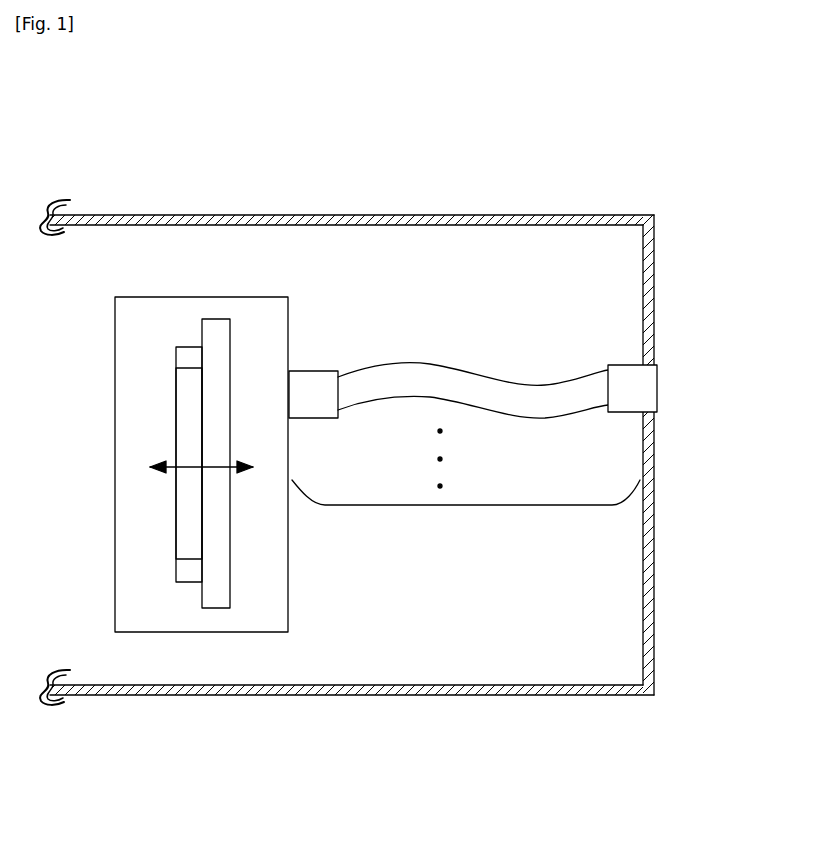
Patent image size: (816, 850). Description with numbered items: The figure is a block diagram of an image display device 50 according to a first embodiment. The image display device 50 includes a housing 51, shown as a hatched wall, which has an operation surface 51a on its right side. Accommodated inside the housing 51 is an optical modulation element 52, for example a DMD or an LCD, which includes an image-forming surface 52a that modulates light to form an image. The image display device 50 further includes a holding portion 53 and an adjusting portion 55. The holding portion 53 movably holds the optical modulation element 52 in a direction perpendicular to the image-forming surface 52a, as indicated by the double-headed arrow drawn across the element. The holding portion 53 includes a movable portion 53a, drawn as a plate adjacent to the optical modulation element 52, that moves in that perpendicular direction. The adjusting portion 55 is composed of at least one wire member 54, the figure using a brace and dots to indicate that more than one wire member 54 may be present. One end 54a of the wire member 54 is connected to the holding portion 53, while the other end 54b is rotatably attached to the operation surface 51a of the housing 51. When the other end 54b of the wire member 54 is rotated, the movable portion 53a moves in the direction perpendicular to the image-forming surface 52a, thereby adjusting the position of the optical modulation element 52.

The image display device 50 is at (386, 197).
The housing 51 is at (465, 214).
The operation surface 51a is at (656, 362).
The optical modulation element 52 is at (192, 345).
The image-forming surface 52a is at (176, 505).
The holding portion 53 is at (288, 298).
The movable portion 53a is at (222, 318).
The wire member 54 is at (436, 367).
The one end 54a is at (309, 371).
The other end 54b is at (630, 413).
The adjusting portion 55 is at (466, 505).